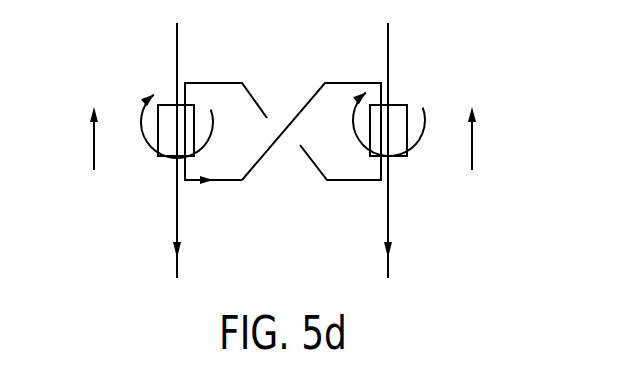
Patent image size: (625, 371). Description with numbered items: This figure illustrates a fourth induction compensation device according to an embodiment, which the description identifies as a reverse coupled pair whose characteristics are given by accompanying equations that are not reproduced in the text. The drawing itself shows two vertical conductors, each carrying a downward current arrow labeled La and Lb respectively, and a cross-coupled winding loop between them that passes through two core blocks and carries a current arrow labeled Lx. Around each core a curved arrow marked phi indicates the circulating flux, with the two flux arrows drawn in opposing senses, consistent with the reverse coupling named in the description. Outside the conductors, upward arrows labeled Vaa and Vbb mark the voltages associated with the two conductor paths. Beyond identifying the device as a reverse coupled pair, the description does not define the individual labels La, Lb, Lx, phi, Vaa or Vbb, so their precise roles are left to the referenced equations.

The current in conductor a La is at (190, 150).
The current in conductor b Lb is at (401, 150).
The current in cross-coupled winding Lx is at (283, 150).
The magnetic flux phi is at (120, 47).
The voltage across conductor a Vaa is at (84, 158).
The voltage across conductor b Vbb is at (516, 158).